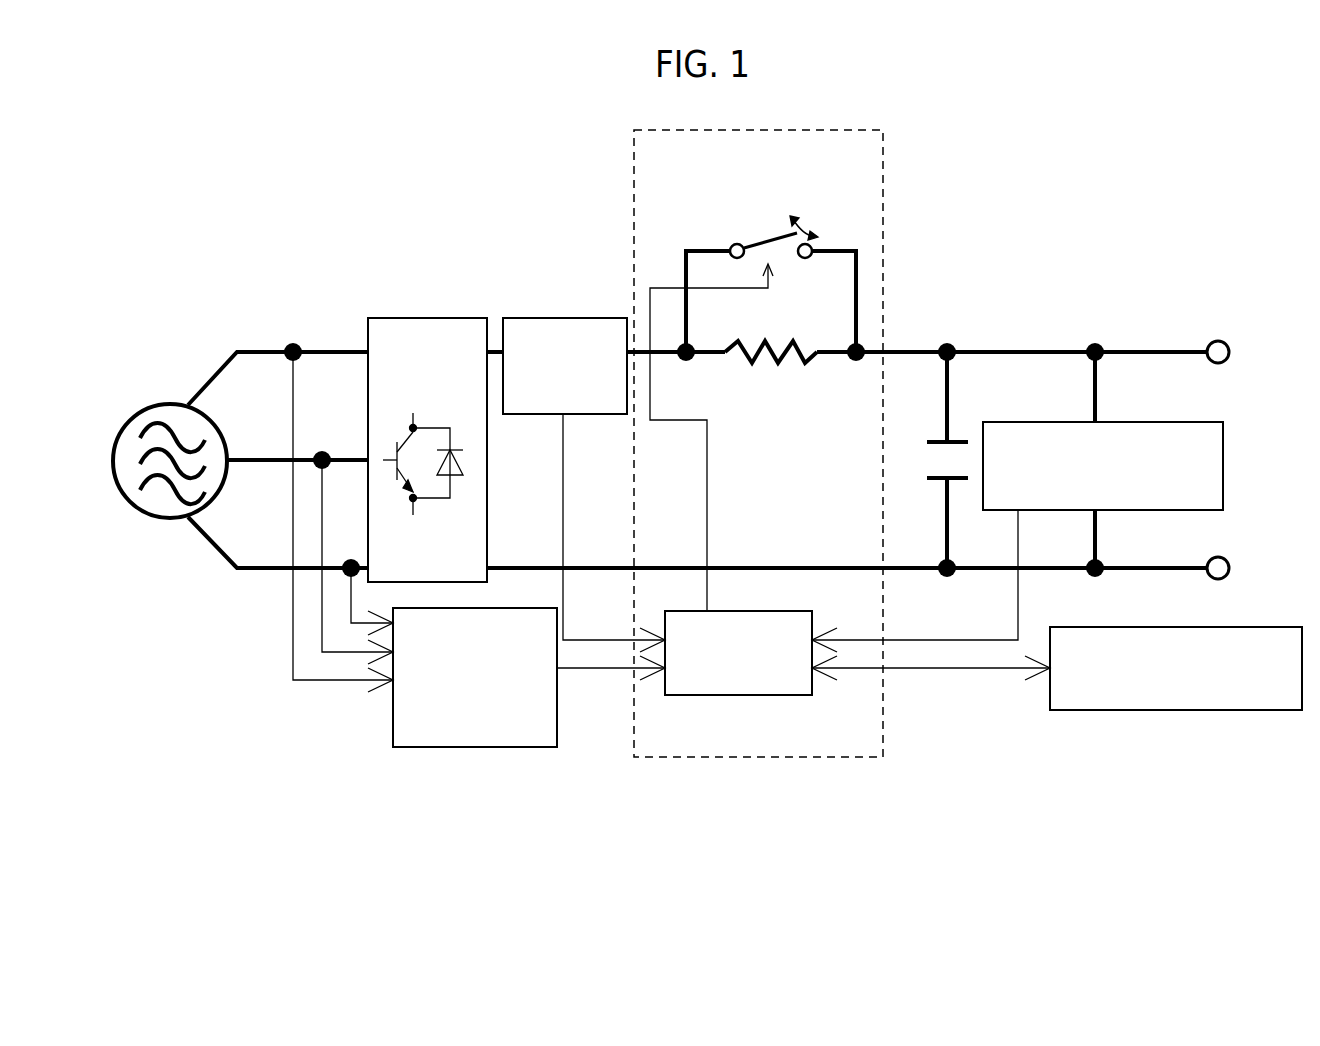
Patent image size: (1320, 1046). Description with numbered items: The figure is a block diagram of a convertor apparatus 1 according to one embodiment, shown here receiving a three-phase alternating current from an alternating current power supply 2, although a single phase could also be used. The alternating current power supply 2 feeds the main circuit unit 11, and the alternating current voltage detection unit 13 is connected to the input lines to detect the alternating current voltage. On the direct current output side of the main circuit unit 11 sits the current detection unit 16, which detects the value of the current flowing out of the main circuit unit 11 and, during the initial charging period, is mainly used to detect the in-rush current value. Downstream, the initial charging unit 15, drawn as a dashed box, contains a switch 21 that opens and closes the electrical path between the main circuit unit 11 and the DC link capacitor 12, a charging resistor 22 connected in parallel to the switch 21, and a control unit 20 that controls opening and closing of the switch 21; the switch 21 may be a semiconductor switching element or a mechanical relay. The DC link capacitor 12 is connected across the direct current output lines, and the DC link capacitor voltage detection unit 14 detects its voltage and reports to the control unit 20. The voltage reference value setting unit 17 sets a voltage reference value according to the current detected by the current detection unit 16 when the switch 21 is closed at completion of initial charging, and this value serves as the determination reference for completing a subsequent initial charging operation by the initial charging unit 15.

The convertor apparatus 1 is at (548, 790).
The alternating current power supply 2 is at (165, 405).
The main circuit unit 11 is at (398, 318).
The DC link capacitor 12 is at (960, 424).
The alternating current voltage detection unit 13 is at (417, 747).
The DC link capacitor voltage detection unit 14 is at (1128, 422).
The initial charging unit 15 is at (884, 180).
The current detection unit 16 is at (532, 318).
The voltage reference value setting unit 17 is at (1075, 710).
The control unit 20 is at (727, 695).
The switch 21 is at (770, 245).
The charging resistor 22 is at (767, 365).